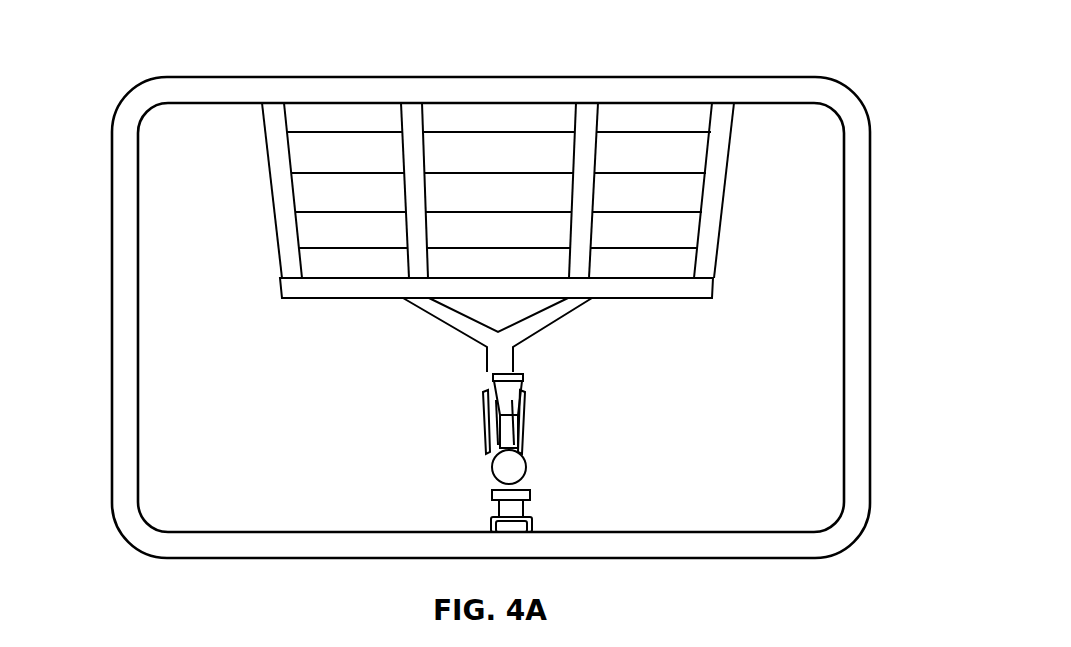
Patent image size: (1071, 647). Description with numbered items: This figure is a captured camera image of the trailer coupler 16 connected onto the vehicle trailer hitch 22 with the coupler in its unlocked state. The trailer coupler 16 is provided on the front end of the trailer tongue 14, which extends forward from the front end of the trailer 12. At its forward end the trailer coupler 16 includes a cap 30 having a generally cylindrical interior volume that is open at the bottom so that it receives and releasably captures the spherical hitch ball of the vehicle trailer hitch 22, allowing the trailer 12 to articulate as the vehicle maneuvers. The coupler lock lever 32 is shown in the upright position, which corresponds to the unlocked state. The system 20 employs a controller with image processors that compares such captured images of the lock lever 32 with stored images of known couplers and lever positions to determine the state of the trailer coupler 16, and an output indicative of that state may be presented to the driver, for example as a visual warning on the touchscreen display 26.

The trailer 12 is at (750, 183).
The trailer tongue 14 is at (493, 362).
The trailer coupler 16 is at (527, 415).
The system 20 is at (488, 470).
The vehicle trailer hitch 22 is at (510, 509).
The touchscreen display 26 is at (755, 77).
The cap 30 is at (513, 465).
The coupler lock lever 32 is at (523, 385).